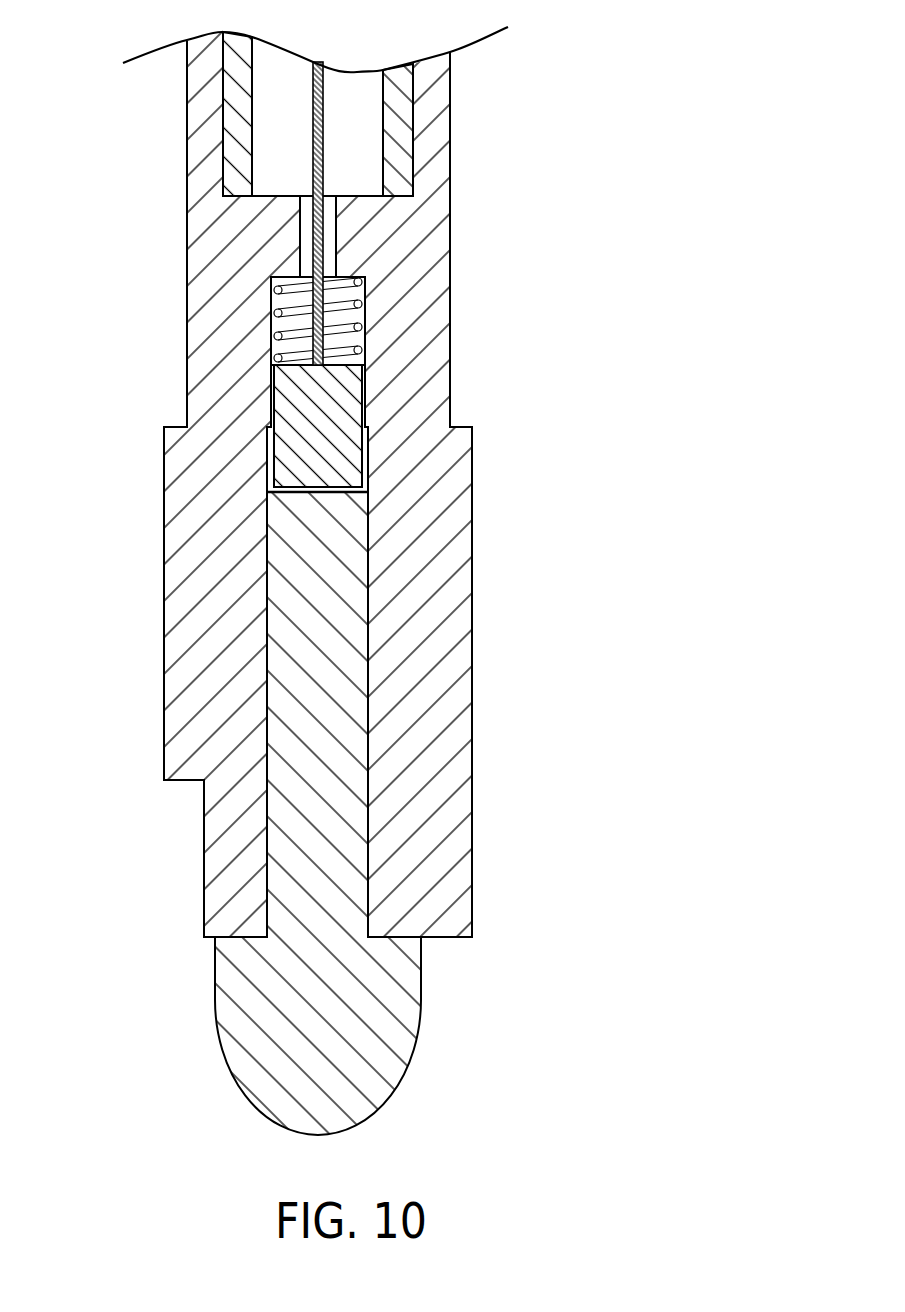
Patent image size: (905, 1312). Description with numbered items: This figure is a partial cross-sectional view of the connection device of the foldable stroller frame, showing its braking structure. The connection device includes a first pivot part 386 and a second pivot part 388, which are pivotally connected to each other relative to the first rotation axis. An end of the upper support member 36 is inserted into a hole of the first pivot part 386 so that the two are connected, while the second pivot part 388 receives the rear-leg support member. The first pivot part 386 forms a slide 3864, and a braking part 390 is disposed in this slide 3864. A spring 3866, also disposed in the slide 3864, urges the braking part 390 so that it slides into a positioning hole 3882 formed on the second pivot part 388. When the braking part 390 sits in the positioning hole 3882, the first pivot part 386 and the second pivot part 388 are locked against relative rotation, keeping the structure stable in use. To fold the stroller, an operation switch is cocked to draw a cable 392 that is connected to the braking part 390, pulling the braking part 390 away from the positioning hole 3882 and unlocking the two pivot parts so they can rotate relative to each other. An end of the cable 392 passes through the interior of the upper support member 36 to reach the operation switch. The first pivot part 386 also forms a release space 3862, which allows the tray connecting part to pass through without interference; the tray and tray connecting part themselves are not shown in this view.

The upper support member 36 is at (397, 157).
The cable 392 is at (323, 182).
The spring 3866 is at (340, 308).
The slide 3864 is at (343, 338).
The first pivot part 386 is at (408, 412).
The braking part 390 is at (330, 460).
The positioning hole 3882 is at (365, 482).
The second pivot part 388 is at (322, 663).
The release space 3862 is at (188, 832).